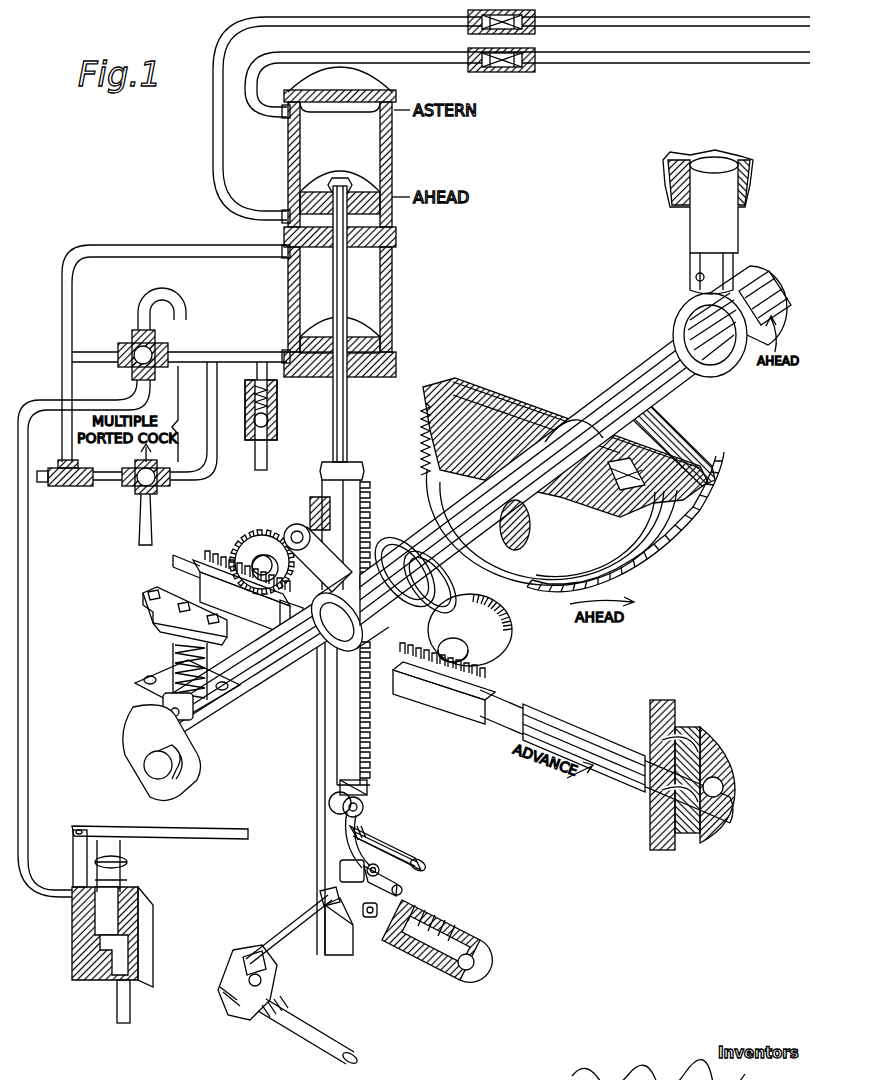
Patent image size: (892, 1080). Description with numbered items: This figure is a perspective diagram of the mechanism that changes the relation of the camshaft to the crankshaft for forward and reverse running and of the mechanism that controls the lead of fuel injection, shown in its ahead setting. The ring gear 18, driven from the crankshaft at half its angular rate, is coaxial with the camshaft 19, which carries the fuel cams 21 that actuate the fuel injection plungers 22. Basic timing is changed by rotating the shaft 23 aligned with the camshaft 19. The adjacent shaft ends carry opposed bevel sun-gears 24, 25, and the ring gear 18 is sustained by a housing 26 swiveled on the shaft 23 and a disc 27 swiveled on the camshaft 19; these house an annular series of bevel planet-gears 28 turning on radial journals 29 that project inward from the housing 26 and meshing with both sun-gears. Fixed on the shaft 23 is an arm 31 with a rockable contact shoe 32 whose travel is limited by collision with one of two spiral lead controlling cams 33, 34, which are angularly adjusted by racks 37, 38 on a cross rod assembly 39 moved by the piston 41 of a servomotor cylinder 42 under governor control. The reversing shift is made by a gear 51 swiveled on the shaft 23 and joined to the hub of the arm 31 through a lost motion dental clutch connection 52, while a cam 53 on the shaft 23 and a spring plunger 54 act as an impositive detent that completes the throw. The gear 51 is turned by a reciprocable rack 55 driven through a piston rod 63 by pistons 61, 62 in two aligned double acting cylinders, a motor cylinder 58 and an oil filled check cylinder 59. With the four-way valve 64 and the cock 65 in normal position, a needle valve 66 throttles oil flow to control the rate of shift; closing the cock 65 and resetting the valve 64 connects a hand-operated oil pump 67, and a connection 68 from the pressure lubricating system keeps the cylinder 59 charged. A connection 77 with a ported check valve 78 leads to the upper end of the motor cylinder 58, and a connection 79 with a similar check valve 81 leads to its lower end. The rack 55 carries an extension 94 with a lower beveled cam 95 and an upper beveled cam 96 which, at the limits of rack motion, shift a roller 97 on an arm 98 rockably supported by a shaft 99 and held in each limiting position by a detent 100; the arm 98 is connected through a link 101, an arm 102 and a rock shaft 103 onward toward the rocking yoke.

The ring gear 18 is at (718, 480).
The camshaft 19 is at (650, 357).
The fuel cams 21 is at (746, 355).
The fuel injection plungers 22 is at (690, 241).
The shaft 23 is at (238, 732).
The bevel sun-gear 24 is at (551, 527).
The bevel sun-gear 25 is at (545, 404).
The housing 26 is at (598, 554).
The disc 27 is at (492, 395).
The bevel planet-gears 28 is at (652, 446).
The radial journals 29 is at (645, 504).
The arm 31 is at (345, 606).
The rockable contact shoe 32 is at (296, 520).
The lead controlling cam 33 is at (262, 540).
The lead controlling cam 34 is at (507, 632).
The rack 37 is at (216, 562).
The rack 38 is at (490, 682).
The cross rod assembly 39 is at (558, 724).
The piston 41 is at (648, 810).
The cylinder 42 is at (690, 845).
The gear 51 is at (410, 538).
The lost motion dental clutch connection 52 is at (445, 592).
The cam 53 is at (133, 730).
The spring plunger 54 is at (208, 660).
The reciprocable rack 55 is at (362, 492).
The motor cylinder 58 is at (370, 137).
The check cylinder 59 is at (370, 270).
The piston 61 is at (323, 180).
The piston 62 is at (365, 331).
The piston rod 63 is at (347, 420).
The four-way valve 64 is at (162, 350).
The cock 65 is at (138, 466).
The needle valve 66 is at (66, 488).
The hand-operated oil pump 67 is at (120, 887).
The connection 68 is at (278, 415).
The connection 77 is at (655, 60).
The ported check valve 78 is at (505, 72).
The connection 79 is at (612, 24).
The check valve 81 is at (533, 32).
The extension 94 is at (318, 857).
The beveled cam 95 is at (346, 945).
The beveled cam 96 is at (365, 789).
The roller 97 is at (329, 806).
The arm 98 is at (368, 820).
The shaft 99 is at (396, 847).
The detent 100 is at (410, 955).
The link 101 is at (296, 934).
The arm 102 is at (250, 1018).
The rock shaft 103 is at (322, 1038).